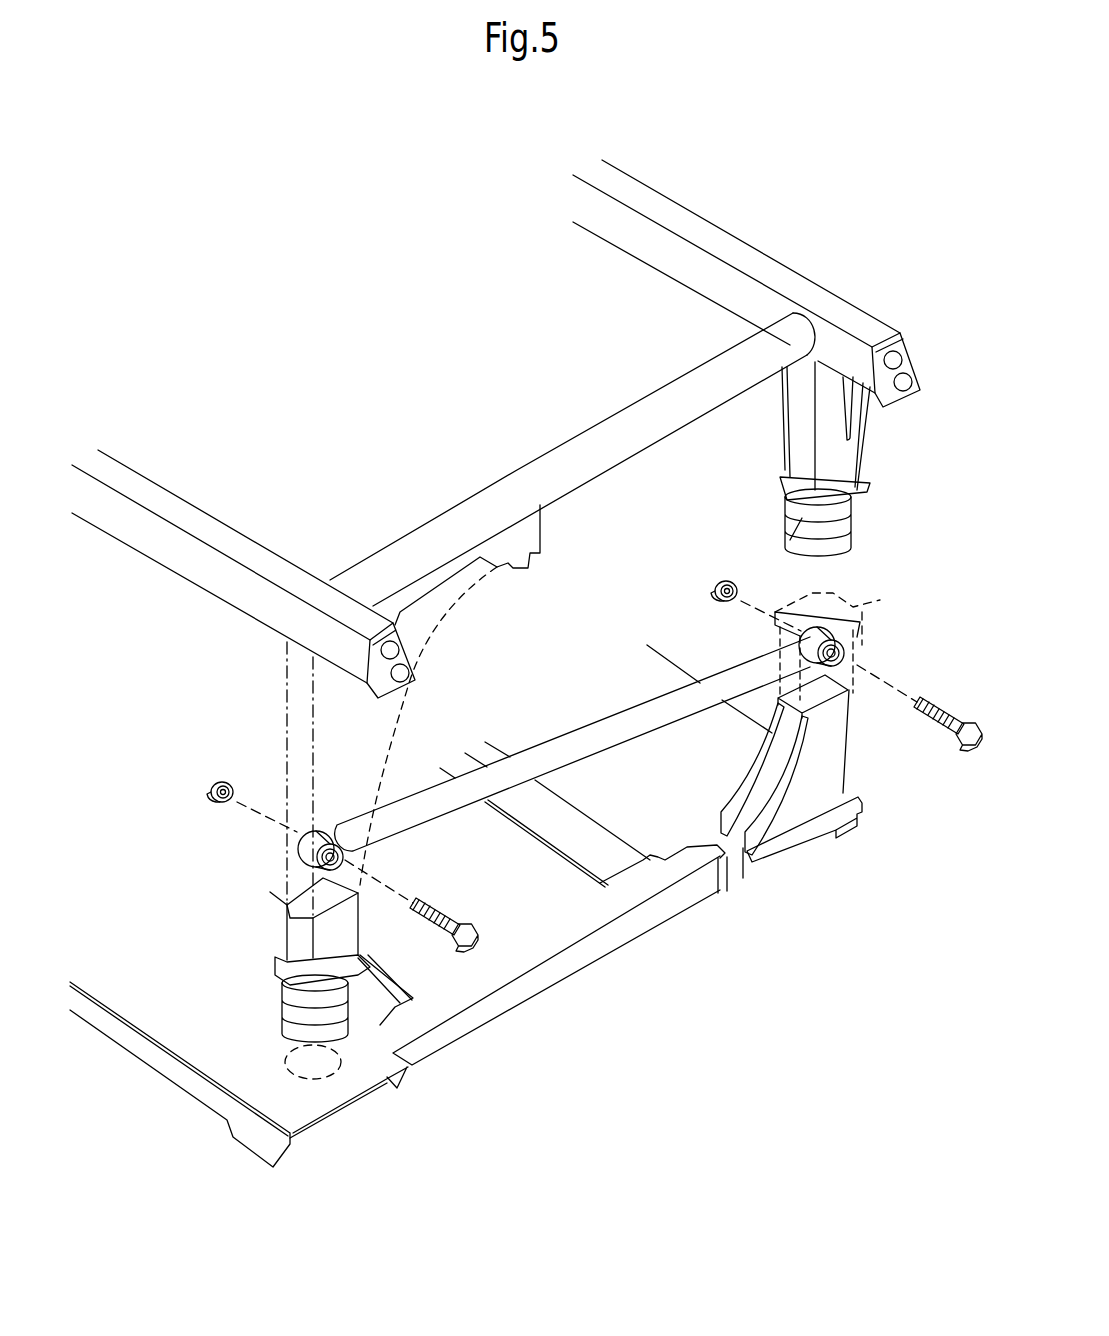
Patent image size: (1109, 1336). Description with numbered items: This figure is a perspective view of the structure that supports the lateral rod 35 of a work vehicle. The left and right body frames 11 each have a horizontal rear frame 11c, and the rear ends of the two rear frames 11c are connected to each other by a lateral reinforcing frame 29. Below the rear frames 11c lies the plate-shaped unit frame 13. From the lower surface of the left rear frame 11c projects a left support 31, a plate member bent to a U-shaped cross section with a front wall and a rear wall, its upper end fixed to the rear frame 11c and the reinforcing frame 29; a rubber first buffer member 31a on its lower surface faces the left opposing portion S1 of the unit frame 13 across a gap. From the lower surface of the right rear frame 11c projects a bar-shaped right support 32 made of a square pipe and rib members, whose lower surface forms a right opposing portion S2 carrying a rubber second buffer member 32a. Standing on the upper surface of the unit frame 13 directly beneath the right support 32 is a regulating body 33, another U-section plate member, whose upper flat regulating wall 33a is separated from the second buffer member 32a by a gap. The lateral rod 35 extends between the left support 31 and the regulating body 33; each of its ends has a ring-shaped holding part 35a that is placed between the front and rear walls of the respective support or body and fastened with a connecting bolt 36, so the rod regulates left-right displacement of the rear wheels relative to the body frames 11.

The body frame 11 is at (496, 429).
The rear frame 11c is at (742, 253).
The unit frame 13 is at (187, 1047).
The lateral reinforcing frame 29 is at (590, 432).
The left support 31 is at (287, 715).
The first buffer member 31a is at (290, 1020).
The right support 32 is at (802, 427).
The second buffer member 32a is at (852, 530).
The regulating body 33 is at (790, 805).
The regulating wall 33a is at (790, 612).
The lateral rod 35 is at (587, 727).
The holding part 35a is at (318, 832).
The connecting bolt 36 is at (477, 933).
The left opposing portion S1 is at (317, 1078).
The right opposing portion S2 is at (790, 540).